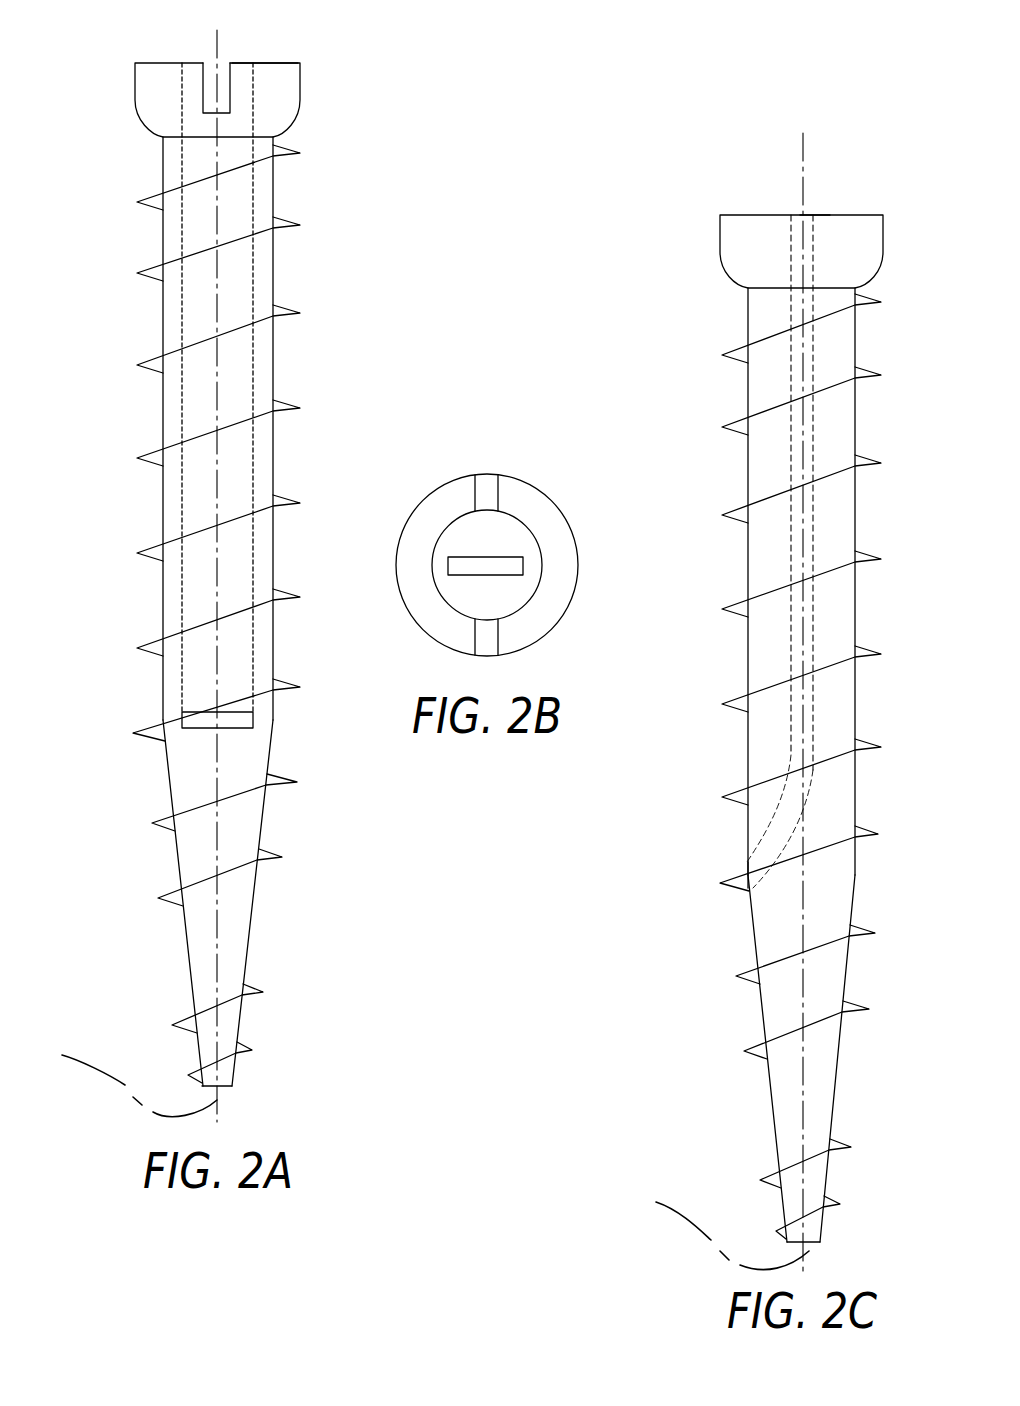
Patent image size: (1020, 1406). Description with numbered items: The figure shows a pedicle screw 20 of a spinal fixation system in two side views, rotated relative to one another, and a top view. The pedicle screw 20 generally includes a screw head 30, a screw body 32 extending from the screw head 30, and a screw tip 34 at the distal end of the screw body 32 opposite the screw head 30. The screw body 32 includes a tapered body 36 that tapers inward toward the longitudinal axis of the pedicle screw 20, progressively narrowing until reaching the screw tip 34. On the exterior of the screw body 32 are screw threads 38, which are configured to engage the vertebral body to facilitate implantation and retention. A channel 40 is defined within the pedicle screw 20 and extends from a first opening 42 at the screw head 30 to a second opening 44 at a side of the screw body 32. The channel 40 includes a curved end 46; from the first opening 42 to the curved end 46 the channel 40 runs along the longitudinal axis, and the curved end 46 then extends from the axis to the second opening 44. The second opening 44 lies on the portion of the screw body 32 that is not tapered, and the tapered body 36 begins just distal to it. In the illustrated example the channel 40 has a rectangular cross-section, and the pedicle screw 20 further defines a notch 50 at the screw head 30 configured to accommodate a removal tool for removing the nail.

In FIG. 2A, the pedicle screw 20 is at (90, 100).
In FIG. 2C, the pedicle screw 20 is at (672, 195).
In FIG. 2A, the screw head 30 is at (300, 82).
In FIG. 2B, the screw head 30 is at (397, 560).
In FIG. 2C, the screw head 30 is at (719, 238).
In FIG. 2A, the screw body 32 is at (273, 350).
In FIG. 2C, the screw body 32 is at (855, 590).
In FIG. 2A, the screw tip 34 is at (226, 1087).
In FIG. 2C, the screw tip 34 is at (813, 1241).
In FIG. 2A, the tapered body 36 is at (252, 910).
In FIG. 2C, the tapered body 36 is at (840, 1062).
In FIG. 2A, the screw threads 38 is at (293, 312).
In FIG. 2C, the screw threads 38 is at (880, 463).
In FIG. 2A, the channel 40 is at (183, 513).
In FIG. 2C, the channel 40 is at (790, 428).
In FIG. 2A, the first opening 42 is at (253, 62).
In FIG. 2B, the first opening 42 is at (505, 559).
In FIG. 2C, the first opening 42 is at (813, 213).
In FIG. 2A, the second opening 44 is at (243, 727).
In FIG. 2C, the second opening 44 is at (747, 862).
In FIG. 2C, the curved end 46 is at (770, 832).
In FIG. 2A, the notch 50 is at (216, 63).
In FIG. 2B, the notch 50 is at (490, 474).